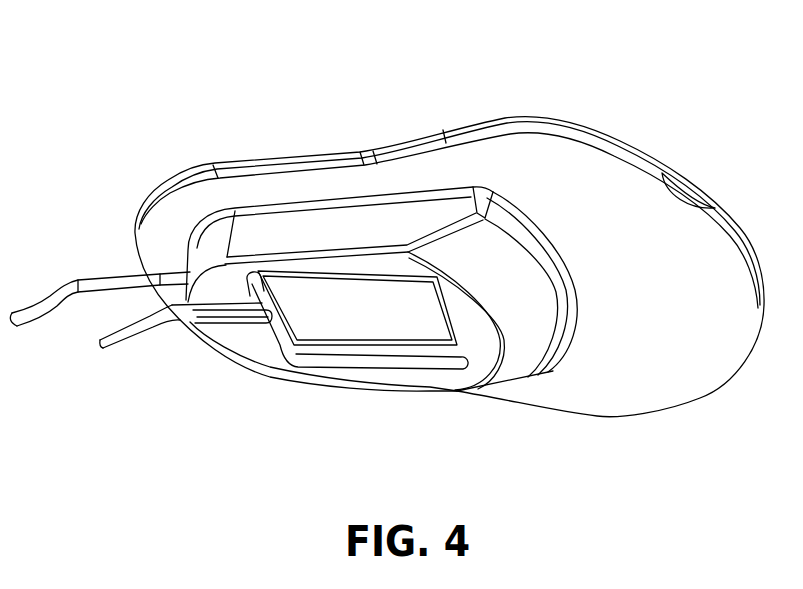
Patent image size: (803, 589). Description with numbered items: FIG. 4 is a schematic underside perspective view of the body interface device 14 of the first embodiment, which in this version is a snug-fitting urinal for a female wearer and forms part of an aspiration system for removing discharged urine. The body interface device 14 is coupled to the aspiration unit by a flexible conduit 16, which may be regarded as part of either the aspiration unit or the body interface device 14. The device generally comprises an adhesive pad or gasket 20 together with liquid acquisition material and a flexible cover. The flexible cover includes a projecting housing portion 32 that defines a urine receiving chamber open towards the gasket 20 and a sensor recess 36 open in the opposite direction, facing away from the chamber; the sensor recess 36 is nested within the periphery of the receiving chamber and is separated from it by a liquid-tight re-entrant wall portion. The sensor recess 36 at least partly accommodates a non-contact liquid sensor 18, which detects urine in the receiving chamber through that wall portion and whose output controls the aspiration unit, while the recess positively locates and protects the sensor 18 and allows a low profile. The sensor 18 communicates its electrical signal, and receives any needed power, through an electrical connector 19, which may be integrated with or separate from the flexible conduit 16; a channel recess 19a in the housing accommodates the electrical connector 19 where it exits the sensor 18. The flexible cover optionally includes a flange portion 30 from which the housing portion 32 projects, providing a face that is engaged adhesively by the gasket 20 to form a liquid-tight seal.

The body interface device 14 is at (216, 55).
The flexible conduit 16 is at (117, 277).
The non-contact liquid sensor 18 is at (328, 327).
The electrical connector 19 is at (118, 342).
The channel recess 19a is at (220, 323).
The adhesive pad (gasket) 20 is at (595, 130).
The flange portion 30 is at (706, 208).
The projecting housing portion 32 is at (512, 360).
The sensor recess 36 is at (398, 353).